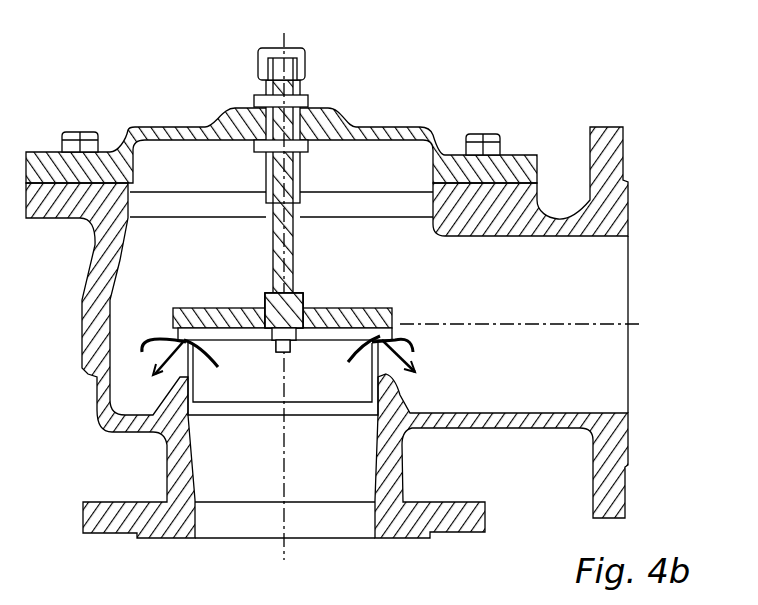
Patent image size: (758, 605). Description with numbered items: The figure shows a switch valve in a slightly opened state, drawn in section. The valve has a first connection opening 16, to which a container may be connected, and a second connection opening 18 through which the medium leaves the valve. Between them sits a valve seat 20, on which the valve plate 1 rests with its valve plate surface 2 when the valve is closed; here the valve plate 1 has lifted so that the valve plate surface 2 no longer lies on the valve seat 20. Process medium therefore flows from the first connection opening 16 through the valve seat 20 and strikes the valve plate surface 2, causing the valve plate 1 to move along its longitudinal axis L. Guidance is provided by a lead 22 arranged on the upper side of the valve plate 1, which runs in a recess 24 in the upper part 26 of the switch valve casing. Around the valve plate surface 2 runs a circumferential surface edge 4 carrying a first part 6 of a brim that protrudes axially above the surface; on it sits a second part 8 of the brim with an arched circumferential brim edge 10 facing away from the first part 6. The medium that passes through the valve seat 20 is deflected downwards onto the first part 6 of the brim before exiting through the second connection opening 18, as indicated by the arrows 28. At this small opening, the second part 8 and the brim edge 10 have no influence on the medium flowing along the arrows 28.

The valve plate 1 is at (338, 300).
The valve plate surface 2 is at (315, 283).
The circumferential surface edge 4 is at (398, 317).
The first part of the brim 6 is at (400, 323).
The second part of the brim 8 is at (169, 336).
The circumferential brim edge 10 is at (420, 348).
The first connection opening 16 is at (252, 525).
The second connection opening 18 is at (612, 288).
The valve seat 20 is at (196, 358).
The lead 22 is at (293, 237).
The recess 24 is at (252, 106).
The upper part of the switch valve casing 26 is at (347, 107).
The arrows 28 is at (340, 357).
The longitudinal axis L is at (284, 34).